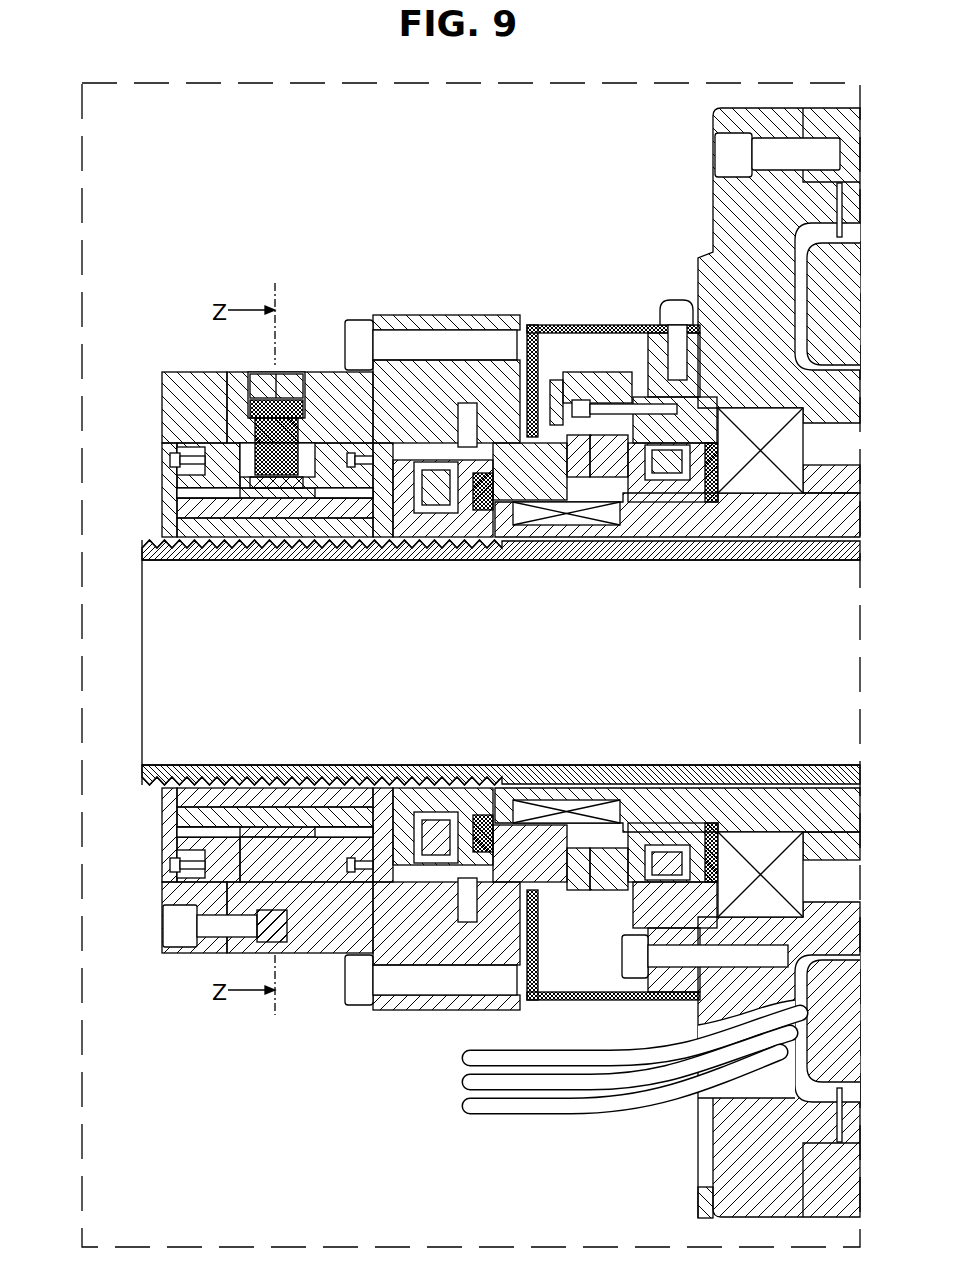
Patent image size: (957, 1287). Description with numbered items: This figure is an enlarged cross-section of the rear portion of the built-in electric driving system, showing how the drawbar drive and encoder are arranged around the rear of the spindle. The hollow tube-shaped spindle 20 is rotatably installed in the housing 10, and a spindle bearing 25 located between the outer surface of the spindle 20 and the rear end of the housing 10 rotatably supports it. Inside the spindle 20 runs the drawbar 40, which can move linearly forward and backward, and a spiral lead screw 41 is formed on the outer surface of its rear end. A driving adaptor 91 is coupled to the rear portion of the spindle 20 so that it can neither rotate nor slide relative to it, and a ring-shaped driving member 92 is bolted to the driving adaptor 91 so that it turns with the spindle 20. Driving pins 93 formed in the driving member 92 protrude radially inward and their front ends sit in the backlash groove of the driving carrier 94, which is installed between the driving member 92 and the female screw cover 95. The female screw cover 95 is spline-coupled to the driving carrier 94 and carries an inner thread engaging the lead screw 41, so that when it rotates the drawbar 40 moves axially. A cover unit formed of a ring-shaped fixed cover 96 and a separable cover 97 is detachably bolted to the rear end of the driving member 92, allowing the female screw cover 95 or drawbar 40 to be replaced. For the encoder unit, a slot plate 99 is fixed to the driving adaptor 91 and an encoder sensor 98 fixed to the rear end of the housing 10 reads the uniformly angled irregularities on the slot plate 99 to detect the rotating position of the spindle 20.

The housing 10 is at (725, 197).
The spindle 20 is at (733, 520).
The spindle bearing 25 is at (770, 480).
The drawbar 40 is at (678, 558).
The lead screw 41 is at (316, 547).
The driving adaptor 91 is at (488, 368).
The driving member 92 is at (317, 390).
The driving pin 93 is at (242, 420).
The driving carrier 94 is at (175, 445).
The female screw cover 95 is at (213, 543).
The fixed cover 96 is at (190, 375).
The separable cover 97 is at (167, 490).
The encoder sensor 98 is at (597, 380).
The slot plate 99 is at (607, 472).